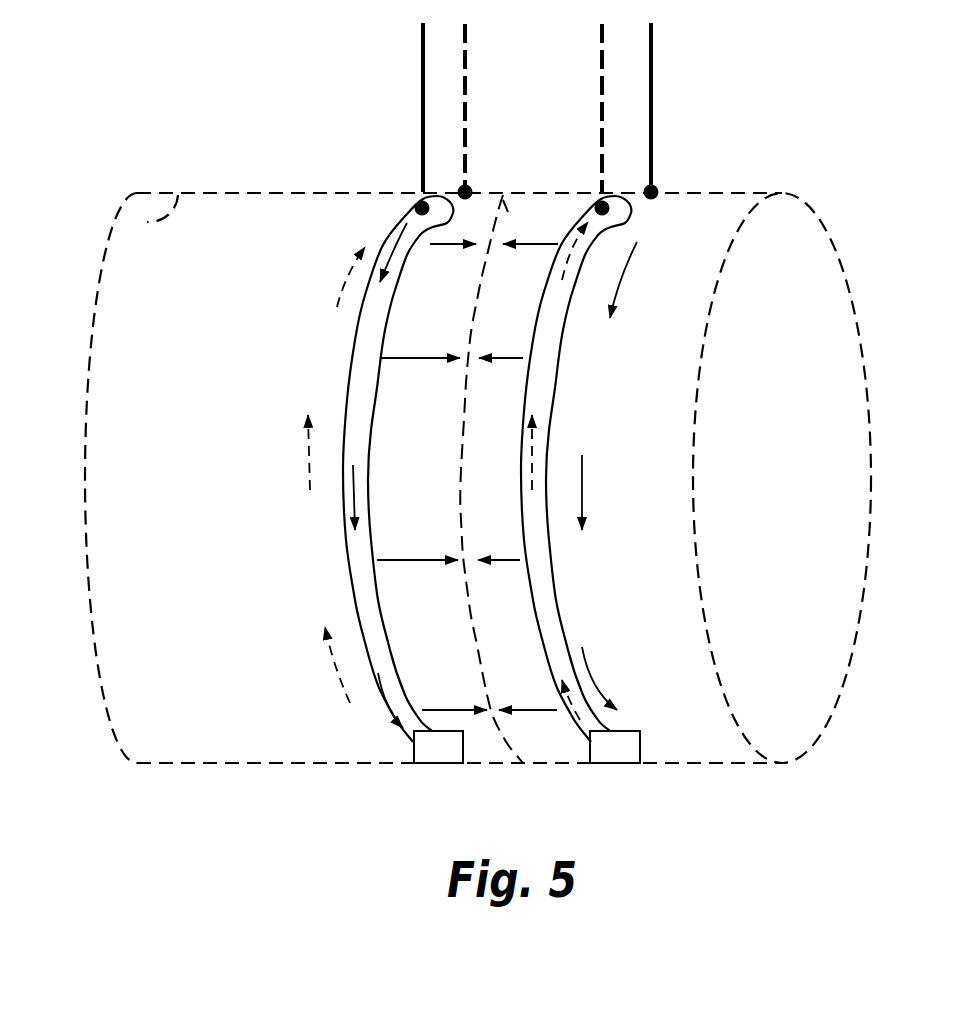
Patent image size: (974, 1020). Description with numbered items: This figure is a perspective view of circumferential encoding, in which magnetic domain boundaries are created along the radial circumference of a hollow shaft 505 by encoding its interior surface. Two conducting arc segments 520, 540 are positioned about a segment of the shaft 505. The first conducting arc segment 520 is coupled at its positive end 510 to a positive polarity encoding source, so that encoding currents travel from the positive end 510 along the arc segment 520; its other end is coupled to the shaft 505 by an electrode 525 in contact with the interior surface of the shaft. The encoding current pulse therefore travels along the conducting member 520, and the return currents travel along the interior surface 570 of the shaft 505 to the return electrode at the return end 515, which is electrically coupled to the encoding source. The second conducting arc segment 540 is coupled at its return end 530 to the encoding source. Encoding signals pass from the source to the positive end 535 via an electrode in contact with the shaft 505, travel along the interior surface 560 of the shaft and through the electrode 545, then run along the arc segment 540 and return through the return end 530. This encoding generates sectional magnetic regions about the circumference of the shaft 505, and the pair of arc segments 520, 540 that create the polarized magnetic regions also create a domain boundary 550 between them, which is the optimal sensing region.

The shaft 505 is at (140, 221).
The positive end 510 is at (423, 95).
The return end 515 is at (466, 75).
The conducting arc segment 520 is at (352, 352).
The electrode 525 is at (448, 750).
The return end 530 is at (602, 108).
The positive end 535 is at (652, 75).
The conducting arc segment 540 is at (541, 385).
The electrode 545 is at (623, 750).
The domain boundary 550 is at (503, 195).
The interior surface 560 is at (623, 268).
The interior surface 570 is at (345, 275).